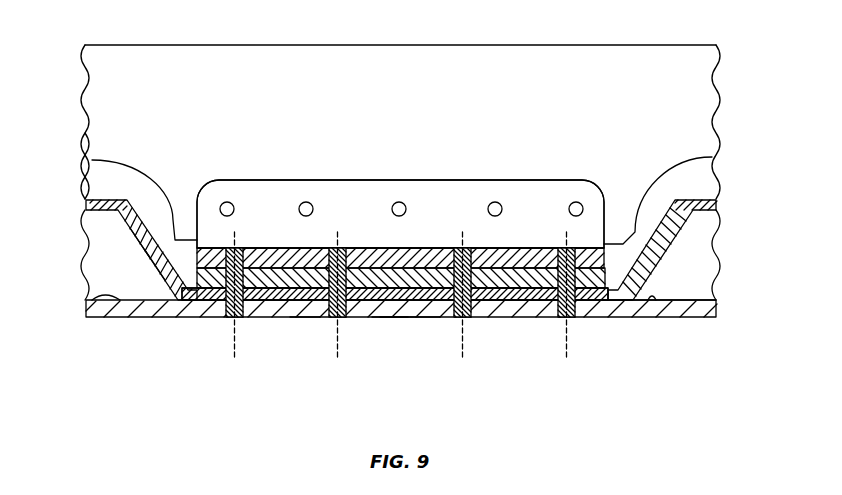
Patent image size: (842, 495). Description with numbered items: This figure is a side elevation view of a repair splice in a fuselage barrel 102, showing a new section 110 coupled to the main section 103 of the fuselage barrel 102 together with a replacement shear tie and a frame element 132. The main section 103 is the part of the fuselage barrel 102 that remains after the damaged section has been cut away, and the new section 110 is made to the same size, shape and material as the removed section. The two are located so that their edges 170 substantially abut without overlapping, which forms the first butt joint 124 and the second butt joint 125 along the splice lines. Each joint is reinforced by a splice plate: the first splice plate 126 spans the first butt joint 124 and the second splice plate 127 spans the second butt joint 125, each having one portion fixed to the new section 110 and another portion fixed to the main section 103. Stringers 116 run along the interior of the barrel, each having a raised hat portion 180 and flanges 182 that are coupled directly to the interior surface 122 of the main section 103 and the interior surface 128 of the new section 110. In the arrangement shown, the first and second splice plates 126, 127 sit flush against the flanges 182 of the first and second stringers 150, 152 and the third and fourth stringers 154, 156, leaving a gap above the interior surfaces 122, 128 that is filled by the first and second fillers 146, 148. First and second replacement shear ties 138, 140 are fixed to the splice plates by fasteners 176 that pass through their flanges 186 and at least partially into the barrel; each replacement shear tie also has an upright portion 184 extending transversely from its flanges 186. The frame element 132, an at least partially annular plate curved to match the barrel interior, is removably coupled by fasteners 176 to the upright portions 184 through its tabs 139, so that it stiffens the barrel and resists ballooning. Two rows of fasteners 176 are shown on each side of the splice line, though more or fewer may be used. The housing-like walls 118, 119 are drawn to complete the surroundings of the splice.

The fuselage barrel 102 is at (700, 318).
The main section 103 is at (302, 313).
The new section 110 is at (674, 305).
The stringer 116 is at (178, 192).
The housing side wall 118 is at (58, 190).
The housing side wall 119 is at (76, 182).
The interior surface 122 is at (88, 300).
The first butt joint 124 is at (446, 374).
The second butt joint 125 is at (412, 330).
The first splice plate 126 is at (496, 247).
The second splice plate 127 is at (615, 268).
The interior surface 128 is at (652, 298).
The frame element 132 is at (598, 78).
The first replacement shear tie 138 is at (530, 198).
The tab 139 is at (143, 243).
The second replacement shear tie 140 is at (92, 160).
The first filler 146 is at (395, 341).
The second filler 148 is at (445, 295).
The first stringer 150 is at (178, 192).
The second stringer 152 is at (662, 199).
The third stringer 154 is at (100, 200).
The fourth stringer 156 is at (703, 200).
The edge 170 is at (404, 313).
The fastener 176 is at (229, 201).
The hat portion 180 is at (158, 270).
The flange 182 is at (200, 297).
The upright portion 184 is at (431, 187).
The flange 186 is at (515, 258).